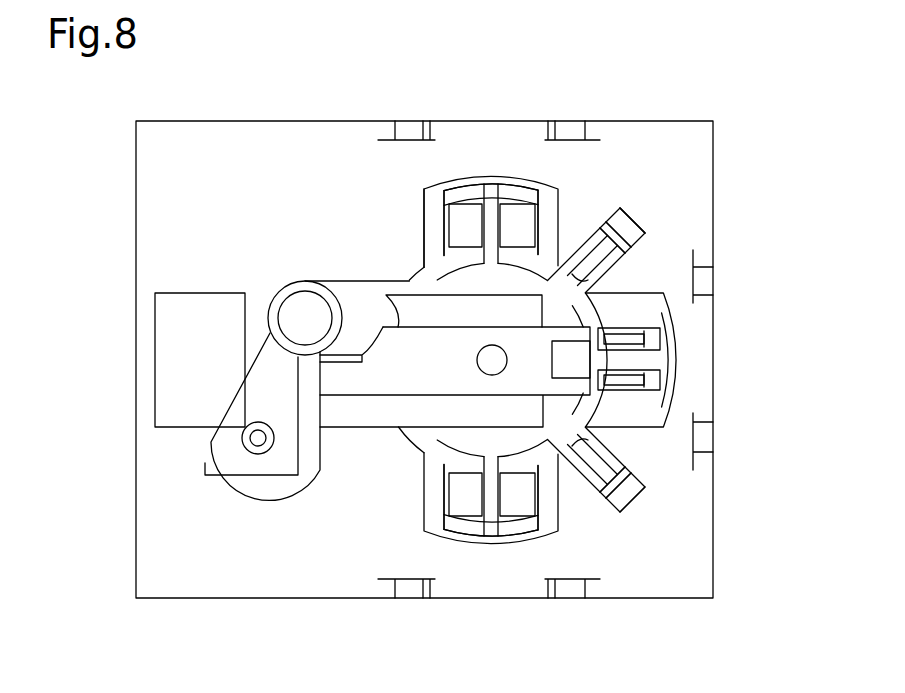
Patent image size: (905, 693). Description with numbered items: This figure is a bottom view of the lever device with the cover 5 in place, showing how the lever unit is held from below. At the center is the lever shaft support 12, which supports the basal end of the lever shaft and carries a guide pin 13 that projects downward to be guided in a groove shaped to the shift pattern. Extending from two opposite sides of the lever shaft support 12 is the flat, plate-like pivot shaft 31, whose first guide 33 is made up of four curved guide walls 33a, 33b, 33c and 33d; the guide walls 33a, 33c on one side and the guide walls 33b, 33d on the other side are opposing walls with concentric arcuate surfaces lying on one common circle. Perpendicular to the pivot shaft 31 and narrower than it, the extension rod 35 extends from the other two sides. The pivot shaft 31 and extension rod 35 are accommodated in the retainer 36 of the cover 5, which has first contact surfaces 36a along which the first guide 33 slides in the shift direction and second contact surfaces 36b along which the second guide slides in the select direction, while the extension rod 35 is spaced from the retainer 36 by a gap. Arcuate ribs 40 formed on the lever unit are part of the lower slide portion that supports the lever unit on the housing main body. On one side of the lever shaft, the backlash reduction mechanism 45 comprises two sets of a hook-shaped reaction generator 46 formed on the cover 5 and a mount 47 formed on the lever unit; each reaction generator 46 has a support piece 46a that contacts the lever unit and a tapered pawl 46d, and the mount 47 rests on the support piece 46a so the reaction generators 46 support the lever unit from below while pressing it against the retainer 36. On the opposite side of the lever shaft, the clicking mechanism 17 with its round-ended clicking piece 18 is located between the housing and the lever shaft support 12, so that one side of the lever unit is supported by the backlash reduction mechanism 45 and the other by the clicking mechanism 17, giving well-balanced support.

The cover 5 is at (222, 121).
The lever shaft support 12 is at (412, 280).
The guide pin 13 is at (242, 440).
The clicking mechanism 17 is at (298, 263).
The clicking piece 18 is at (288, 300).
The pivot shaft 31 is at (430, 188).
The first guide 33 is at (493, 330).
The guide wall 33a is at (424, 515).
The guide wall 33b is at (424, 250).
The guide wall 33c is at (567, 532).
The guide wall 33d is at (562, 190).
The extension rod 35 is at (660, 318).
The retainer 36 is at (554, 256).
The first contact surface 36a is at (424, 225).
The second contact surface 36b is at (540, 190).
The rib 40 is at (490, 188).
The backlash reduction mechanism 45 is at (656, 182).
The reaction generator 46 is at (643, 258).
The support piece 46a is at (633, 228).
The pawl 46d is at (628, 212).
The mount 47 is at (587, 280).